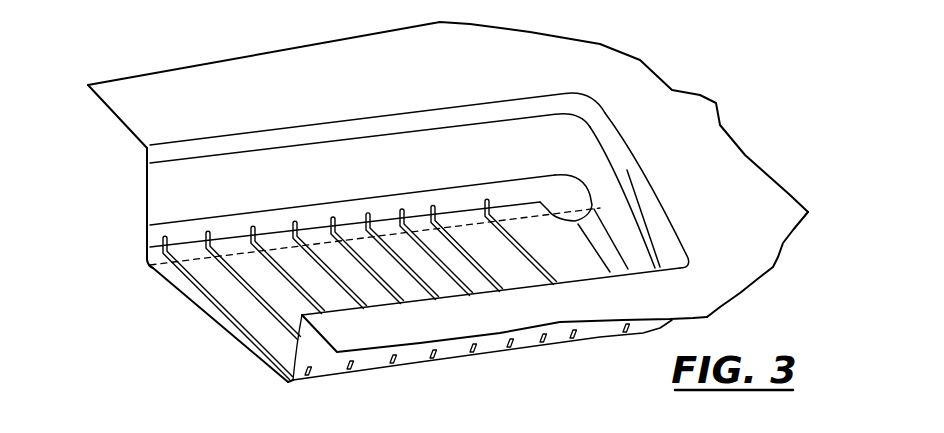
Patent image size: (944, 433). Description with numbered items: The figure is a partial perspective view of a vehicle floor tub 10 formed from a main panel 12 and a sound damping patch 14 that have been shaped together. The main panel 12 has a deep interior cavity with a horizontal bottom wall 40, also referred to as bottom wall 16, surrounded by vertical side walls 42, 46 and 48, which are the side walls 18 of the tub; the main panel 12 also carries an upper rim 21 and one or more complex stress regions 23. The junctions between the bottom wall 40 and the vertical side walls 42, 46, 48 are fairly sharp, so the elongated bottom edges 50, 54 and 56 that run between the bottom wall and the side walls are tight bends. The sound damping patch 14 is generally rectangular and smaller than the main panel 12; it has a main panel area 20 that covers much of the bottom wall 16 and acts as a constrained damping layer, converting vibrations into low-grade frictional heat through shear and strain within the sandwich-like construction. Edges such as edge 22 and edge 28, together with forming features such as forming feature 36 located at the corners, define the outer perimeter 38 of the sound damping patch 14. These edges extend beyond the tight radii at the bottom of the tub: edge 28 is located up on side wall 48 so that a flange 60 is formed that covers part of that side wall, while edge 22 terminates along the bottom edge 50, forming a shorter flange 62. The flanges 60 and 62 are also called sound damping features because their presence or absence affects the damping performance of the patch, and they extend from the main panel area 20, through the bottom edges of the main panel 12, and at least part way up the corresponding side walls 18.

The vehicle floor tub 10 is at (151, 46).
The main panel 12 is at (670, 110).
The sound damping patch 14 is at (227, 293).
The bottom wall 16 is at (240, 347).
The side walls 18 is at (163, 188).
The main panel area 20 is at (312, 301).
The upper rim 21 is at (747, 263).
The edge 22 is at (350, 217).
The complex stress regions 23 is at (573, 190).
The edge 28 is at (617, 240).
The forming feature 36 is at (555, 207).
The outer perimeter 38 is at (463, 208).
The horizontal bottom wall 40 is at (210, 317).
The vertical side wall 42 is at (307, 163).
The vertical side wall 46 is at (302, 343).
The vertical side wall 48 is at (598, 167).
The bottom edge 50 is at (147, 267).
The bottom edge 54 is at (290, 387).
The bottom edge 56 is at (600, 238).
The flange 60 is at (613, 263).
The flange 62 is at (233, 243).